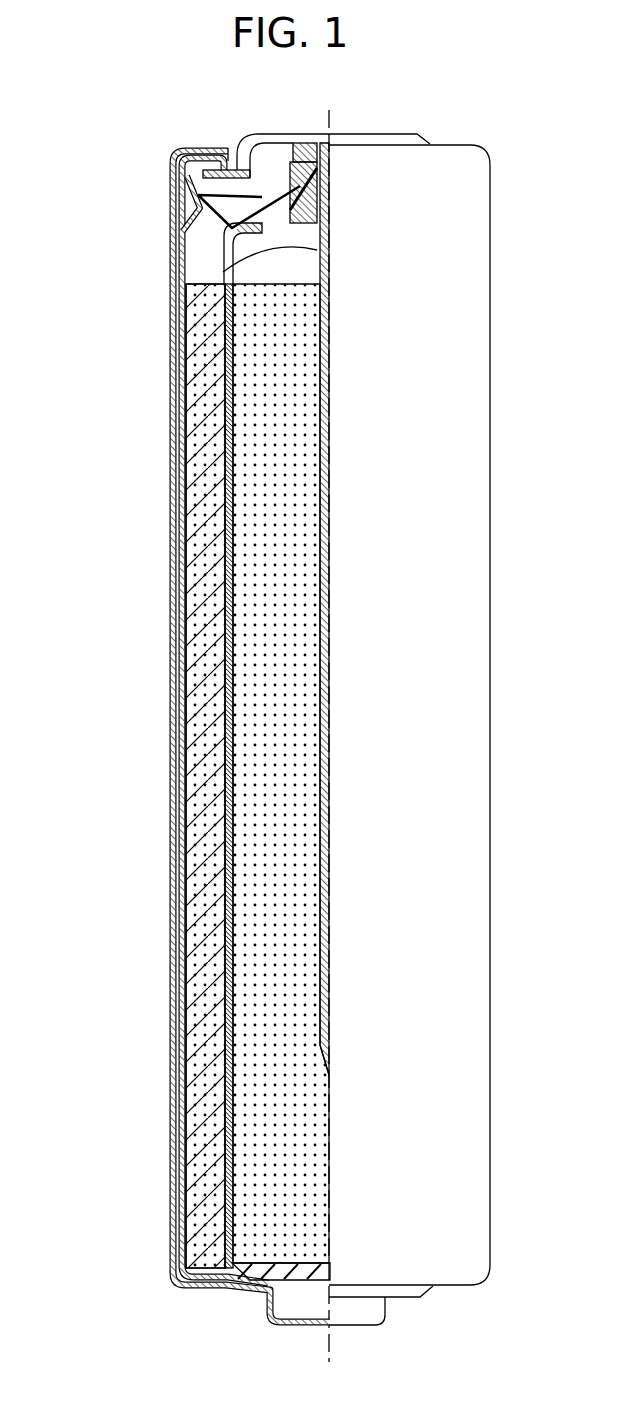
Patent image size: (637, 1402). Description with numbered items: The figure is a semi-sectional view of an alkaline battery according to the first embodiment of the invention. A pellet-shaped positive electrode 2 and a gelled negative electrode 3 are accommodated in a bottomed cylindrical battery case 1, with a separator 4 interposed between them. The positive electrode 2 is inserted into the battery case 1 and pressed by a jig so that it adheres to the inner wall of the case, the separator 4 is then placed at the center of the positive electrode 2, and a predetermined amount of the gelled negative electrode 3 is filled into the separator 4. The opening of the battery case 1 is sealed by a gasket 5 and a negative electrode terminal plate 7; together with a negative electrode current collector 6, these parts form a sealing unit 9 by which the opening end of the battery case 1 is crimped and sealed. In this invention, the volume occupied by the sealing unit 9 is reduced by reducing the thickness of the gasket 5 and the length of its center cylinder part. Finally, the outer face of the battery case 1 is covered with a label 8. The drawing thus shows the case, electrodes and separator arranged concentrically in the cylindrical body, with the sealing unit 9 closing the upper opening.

The battery case 1 is at (175, 669).
The positive electrode 2 is at (190, 988).
The gelled negative electrode 3 is at (245, 557).
The separator 4 is at (228, 770).
The gasket 5 is at (183, 225).
The negative electrode current collector 6 is at (190, 277).
The negative electrode terminal plate 7 is at (277, 135).
The label 8 is at (176, 1078).
The sealing unit 9 is at (101, 75).